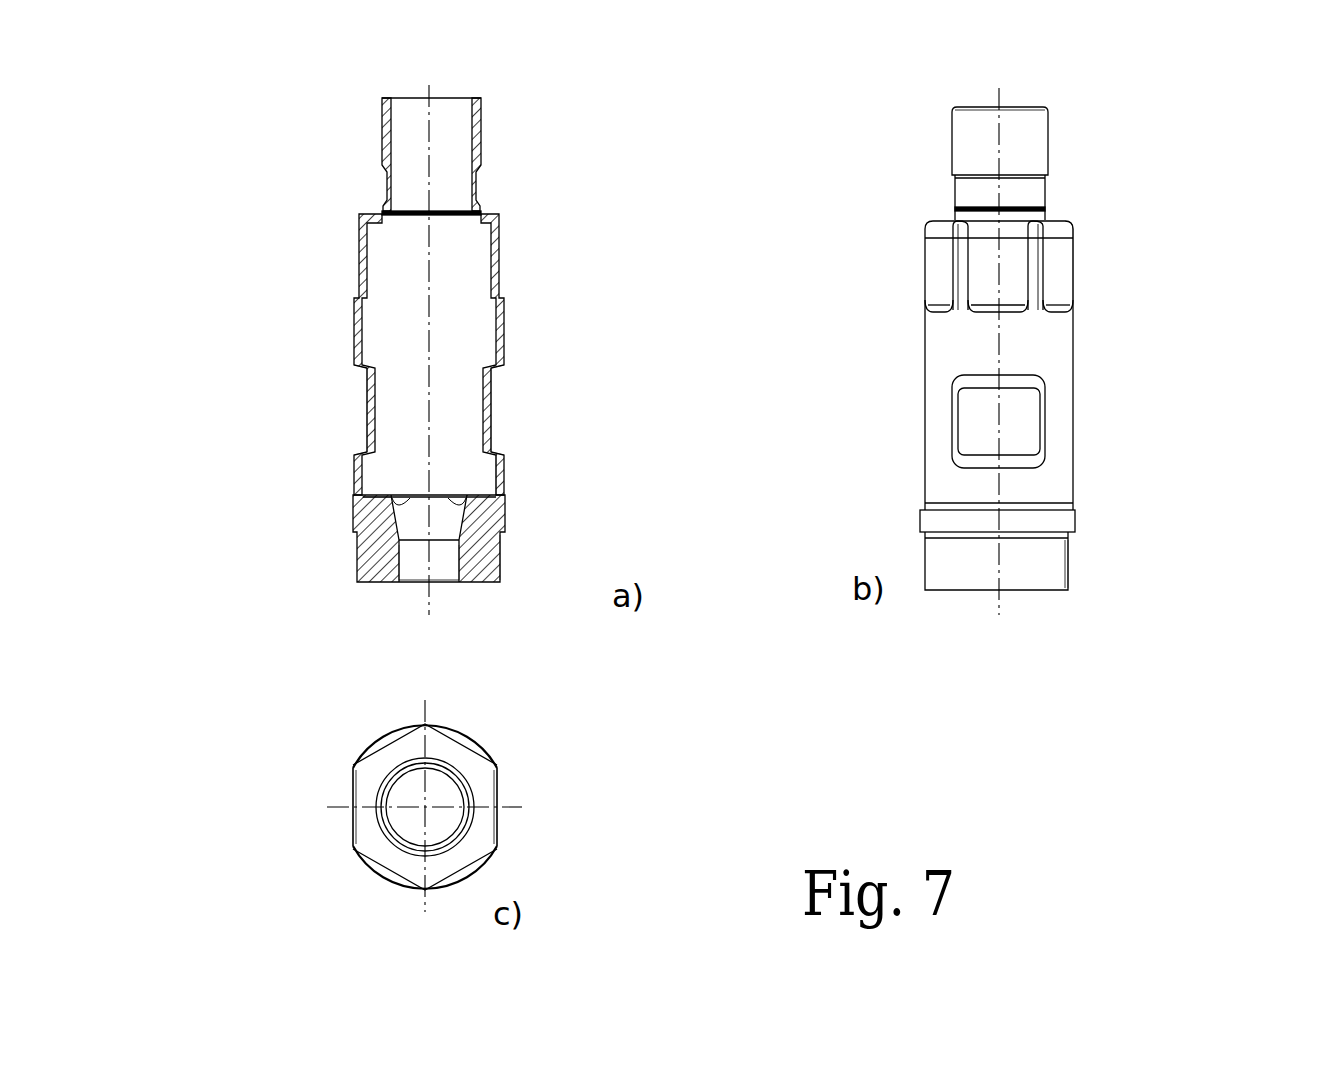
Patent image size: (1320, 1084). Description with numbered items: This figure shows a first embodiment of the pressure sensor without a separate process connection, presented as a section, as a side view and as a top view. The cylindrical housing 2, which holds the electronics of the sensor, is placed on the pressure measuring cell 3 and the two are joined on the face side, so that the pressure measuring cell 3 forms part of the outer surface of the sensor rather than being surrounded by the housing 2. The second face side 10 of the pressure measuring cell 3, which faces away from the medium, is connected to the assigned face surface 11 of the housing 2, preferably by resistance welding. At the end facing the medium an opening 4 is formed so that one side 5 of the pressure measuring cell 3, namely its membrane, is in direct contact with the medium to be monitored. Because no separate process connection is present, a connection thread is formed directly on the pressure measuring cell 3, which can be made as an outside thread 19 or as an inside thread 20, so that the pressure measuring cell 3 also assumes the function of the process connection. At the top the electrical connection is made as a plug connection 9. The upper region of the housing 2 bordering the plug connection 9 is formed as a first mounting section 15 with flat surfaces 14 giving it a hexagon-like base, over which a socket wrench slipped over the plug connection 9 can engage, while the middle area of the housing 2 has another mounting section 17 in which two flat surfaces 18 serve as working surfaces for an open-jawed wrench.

The housing 2 is at (362, 253).
The pressure measuring cell 3 is at (378, 557).
The opening 4 is at (415, 568).
The side of the pressure measuring cell 5 is at (367, 517).
The plug connection 9 is at (383, 130).
The second face side 10 is at (1033, 516).
The face surface of the housing 11 is at (503, 500).
The flat surfaces 14 is at (982, 270).
The first mounting section 15 is at (1090, 262).
The mounting section 17 is at (352, 422).
The flat surfaces 18 is at (490, 400).
The outside thread 19 is at (500, 545).
The inside thread 20 is at (462, 570).